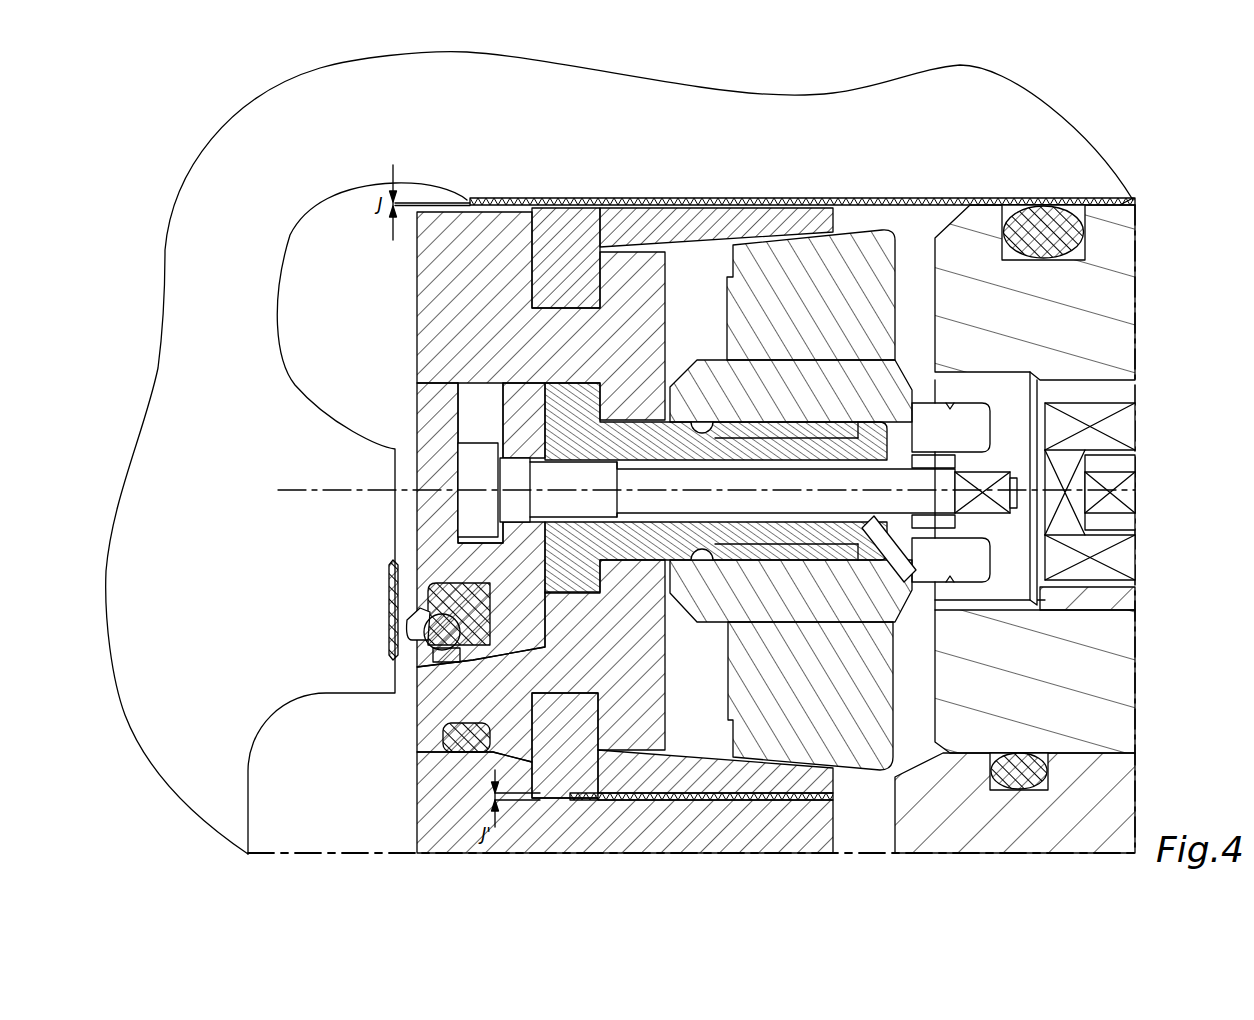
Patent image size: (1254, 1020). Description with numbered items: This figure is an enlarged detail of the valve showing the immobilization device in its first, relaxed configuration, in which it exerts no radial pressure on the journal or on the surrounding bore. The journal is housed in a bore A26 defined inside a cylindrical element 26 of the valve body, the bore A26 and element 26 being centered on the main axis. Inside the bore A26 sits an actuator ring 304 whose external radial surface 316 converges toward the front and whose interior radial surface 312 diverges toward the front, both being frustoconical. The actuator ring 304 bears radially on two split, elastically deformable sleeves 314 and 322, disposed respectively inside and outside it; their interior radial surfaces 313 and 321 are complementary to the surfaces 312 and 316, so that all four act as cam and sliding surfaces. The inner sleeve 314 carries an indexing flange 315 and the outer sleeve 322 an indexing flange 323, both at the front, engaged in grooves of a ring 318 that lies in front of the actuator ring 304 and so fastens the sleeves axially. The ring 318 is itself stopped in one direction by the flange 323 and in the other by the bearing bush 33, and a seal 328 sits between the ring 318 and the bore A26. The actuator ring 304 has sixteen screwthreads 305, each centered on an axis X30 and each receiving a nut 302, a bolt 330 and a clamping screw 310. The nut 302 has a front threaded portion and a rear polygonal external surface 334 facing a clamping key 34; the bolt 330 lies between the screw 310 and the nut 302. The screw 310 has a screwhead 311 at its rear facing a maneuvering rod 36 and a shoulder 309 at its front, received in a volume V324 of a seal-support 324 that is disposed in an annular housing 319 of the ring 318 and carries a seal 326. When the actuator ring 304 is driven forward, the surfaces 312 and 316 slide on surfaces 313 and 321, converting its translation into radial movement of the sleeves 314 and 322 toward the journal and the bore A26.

The ring 318 is at (435, 313).
The indexing flange 315 is at (568, 292).
The elastically deformable sleeve 314 is at (752, 207).
The interior radial surface 312 is at (873, 207).
The actuator ring 304 is at (848, 295).
The interior radial surface 313 is at (718, 248).
The nut 302 is at (960, 368).
The polygonal external surface 334 is at (967, 400).
The clamping screw 310 is at (923, 478).
The maneuvering member 36 is at (1117, 502).
The screwhead 311 is at (988, 523).
The bolt 330 is at (790, 540).
The maneuvering member 34 is at (1117, 596).
The screwthread 305 is at (890, 619).
The interior radial surface 321 is at (717, 750).
The bearing bush 33 is at (1100, 802).
The external radial surface 316 is at (865, 775).
The bore A26 is at (790, 793).
The elastically deformable sleeve 322 is at (683, 772).
The cylindrical element 26 is at (540, 828).
The indexing flange 323 is at (572, 716).
The seal 328 is at (455, 738).
The annular housing 319 is at (460, 665).
The seal 326 is at (440, 605).
The seal-support 324 is at (437, 501).
The axis X30 is at (683, 491).
The shoulder 309 is at (475, 470).
The volume V324 is at (480, 420).